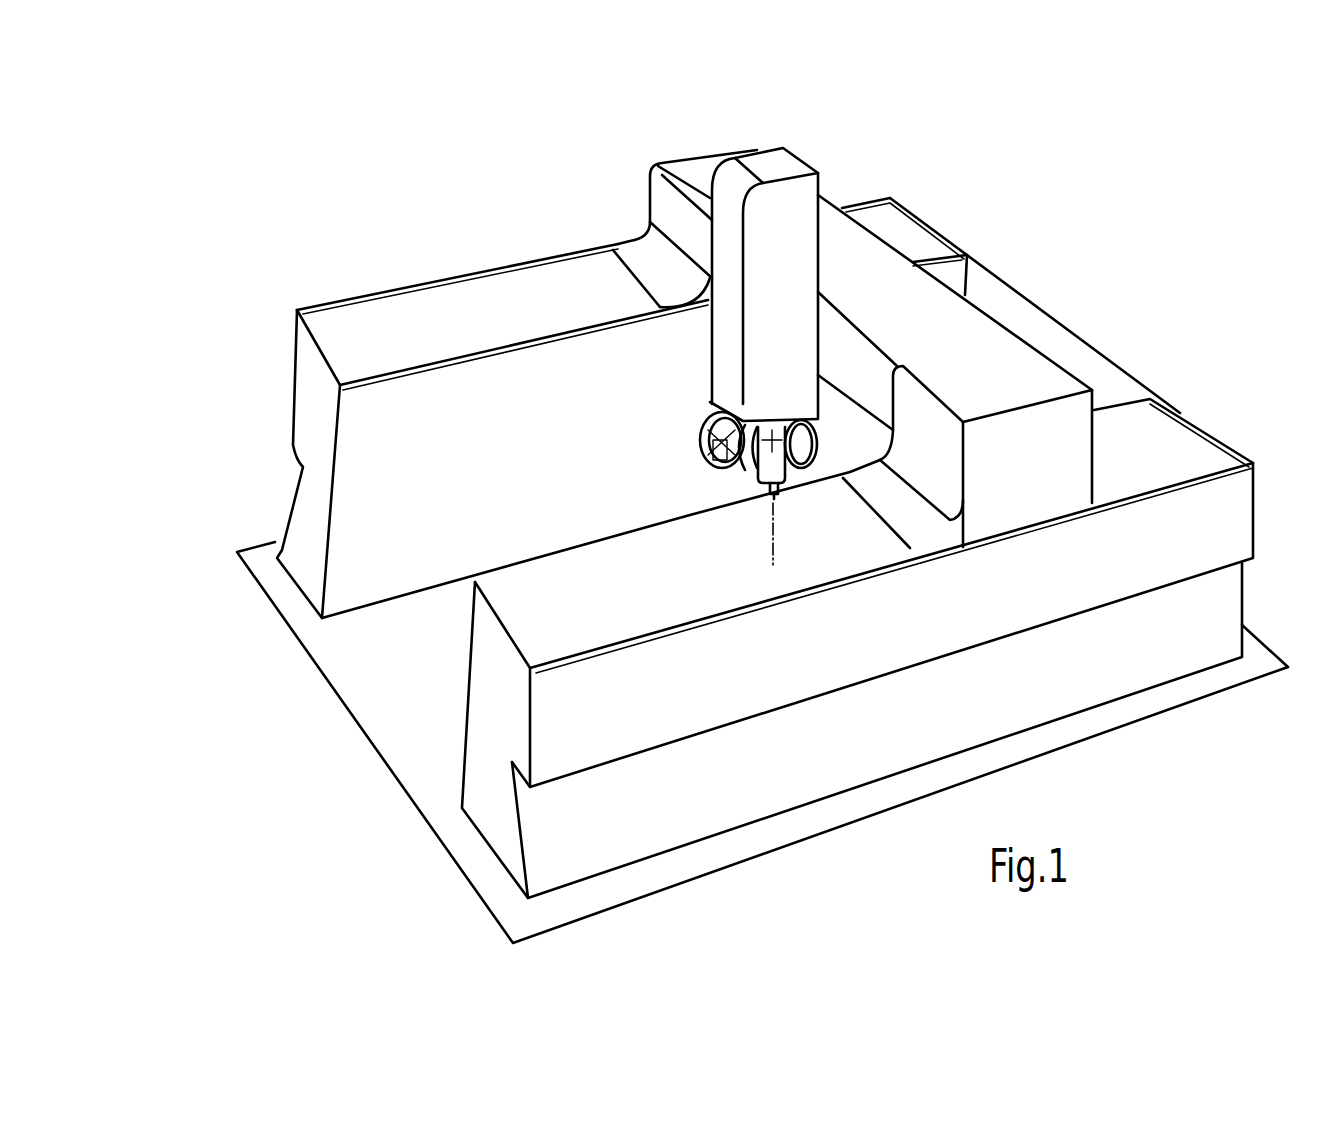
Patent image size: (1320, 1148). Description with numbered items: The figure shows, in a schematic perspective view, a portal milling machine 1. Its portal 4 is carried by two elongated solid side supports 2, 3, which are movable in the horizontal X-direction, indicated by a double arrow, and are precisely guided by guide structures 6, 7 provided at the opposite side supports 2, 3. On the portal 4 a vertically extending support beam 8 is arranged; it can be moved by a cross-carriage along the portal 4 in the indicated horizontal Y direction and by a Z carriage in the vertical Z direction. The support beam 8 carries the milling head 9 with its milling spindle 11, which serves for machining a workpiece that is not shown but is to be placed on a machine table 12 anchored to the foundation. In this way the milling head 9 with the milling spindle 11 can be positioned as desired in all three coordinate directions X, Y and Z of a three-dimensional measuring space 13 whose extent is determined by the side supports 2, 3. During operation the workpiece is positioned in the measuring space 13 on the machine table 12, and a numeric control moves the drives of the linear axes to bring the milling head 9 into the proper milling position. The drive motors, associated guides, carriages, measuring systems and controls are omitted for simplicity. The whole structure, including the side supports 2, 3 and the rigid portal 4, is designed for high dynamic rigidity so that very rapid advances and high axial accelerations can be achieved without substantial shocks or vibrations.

The portal milling machine 1 is at (226, 228).
The side support 2 is at (320, 407).
The side support 3 is at (502, 793).
The portal 4 is at (1013, 362).
The guide structure 6 is at (546, 256).
The guide structure 7 is at (686, 597).
The support beam 8 is at (727, 198).
The milling head 9 is at (660, 427).
The milling spindle 11 is at (792, 500).
The machine table 12 is at (365, 672).
The measuring space 13 is at (462, 417).